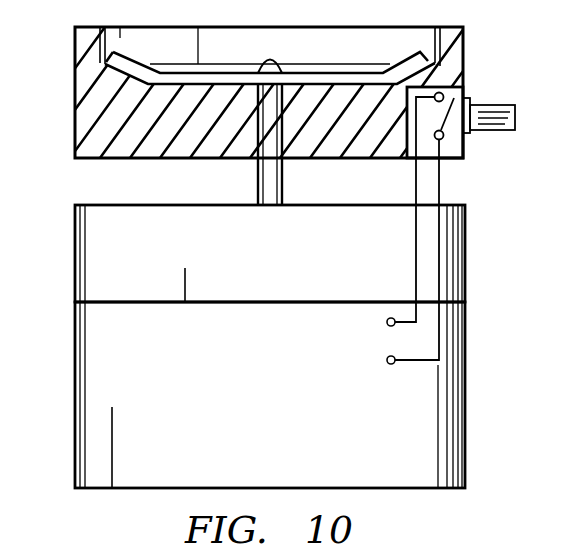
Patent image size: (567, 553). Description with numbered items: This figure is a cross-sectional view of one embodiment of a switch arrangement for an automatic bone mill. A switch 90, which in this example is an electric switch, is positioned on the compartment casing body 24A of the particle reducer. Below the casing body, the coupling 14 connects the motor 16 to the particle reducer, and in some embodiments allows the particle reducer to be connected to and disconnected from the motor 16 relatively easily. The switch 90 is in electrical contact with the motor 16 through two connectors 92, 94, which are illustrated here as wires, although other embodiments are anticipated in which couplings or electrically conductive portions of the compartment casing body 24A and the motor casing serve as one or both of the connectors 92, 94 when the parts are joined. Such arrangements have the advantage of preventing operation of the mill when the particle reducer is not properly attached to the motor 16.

The compartment casing body 24A is at (75, 81).
The switch 90 is at (501, 88).
The connector 92 is at (416, 172).
The connector 94 is at (441, 172).
The coupling 14 is at (287, 280).
The motor 16 is at (285, 428).